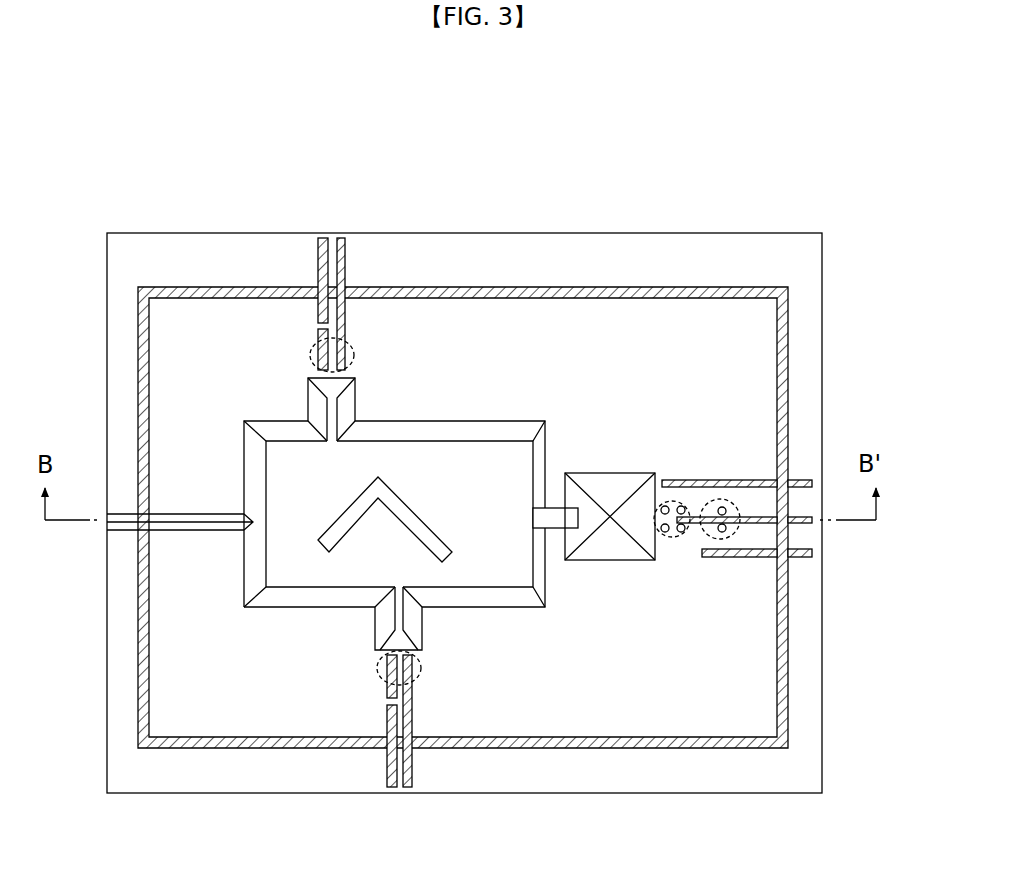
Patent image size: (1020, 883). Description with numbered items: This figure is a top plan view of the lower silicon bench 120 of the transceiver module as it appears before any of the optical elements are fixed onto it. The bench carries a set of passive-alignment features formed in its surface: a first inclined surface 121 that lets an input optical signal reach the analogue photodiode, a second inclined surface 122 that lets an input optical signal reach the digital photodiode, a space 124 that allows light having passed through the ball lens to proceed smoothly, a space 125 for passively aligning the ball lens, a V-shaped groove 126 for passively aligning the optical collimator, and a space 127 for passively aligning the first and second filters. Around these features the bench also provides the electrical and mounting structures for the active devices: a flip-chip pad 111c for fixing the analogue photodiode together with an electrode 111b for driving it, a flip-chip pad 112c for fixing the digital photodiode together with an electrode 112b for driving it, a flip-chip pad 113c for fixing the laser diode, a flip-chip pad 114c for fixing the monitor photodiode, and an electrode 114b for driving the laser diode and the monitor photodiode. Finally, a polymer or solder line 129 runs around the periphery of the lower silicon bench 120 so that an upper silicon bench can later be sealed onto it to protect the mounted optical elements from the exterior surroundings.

The lower silicon bench 120 is at (775, 123).
The electrode 111b is at (340, 238).
The flip-chip pad 111c is at (309, 360).
The electrode 112b is at (400, 793).
The flip-chip pad 112c is at (380, 667).
The flip-chip pad 113c is at (672, 537).
The electrode 114b is at (805, 482).
The flip-chip pad 114c is at (720, 499).
The first inclined surface 121 is at (310, 378).
The second inclined surface 122 is at (375, 645).
The space 124 is at (553, 528).
The space 125 is at (617, 553).
The V-shaped groove 126 is at (172, 533).
The space 127 is at (355, 503).
The polymer or solder line 129 is at (138, 617).